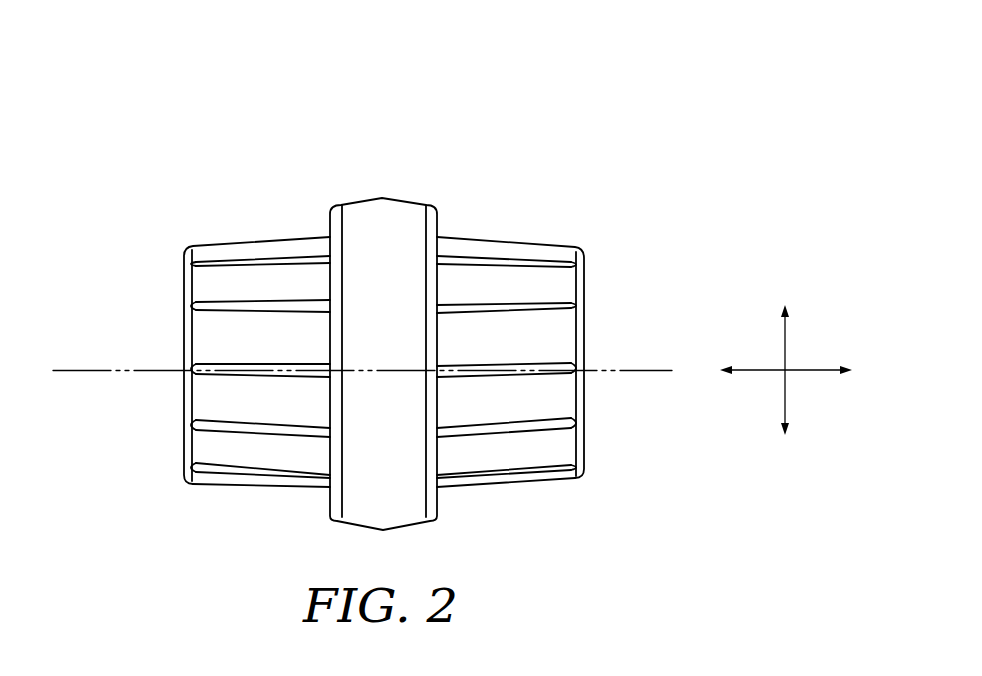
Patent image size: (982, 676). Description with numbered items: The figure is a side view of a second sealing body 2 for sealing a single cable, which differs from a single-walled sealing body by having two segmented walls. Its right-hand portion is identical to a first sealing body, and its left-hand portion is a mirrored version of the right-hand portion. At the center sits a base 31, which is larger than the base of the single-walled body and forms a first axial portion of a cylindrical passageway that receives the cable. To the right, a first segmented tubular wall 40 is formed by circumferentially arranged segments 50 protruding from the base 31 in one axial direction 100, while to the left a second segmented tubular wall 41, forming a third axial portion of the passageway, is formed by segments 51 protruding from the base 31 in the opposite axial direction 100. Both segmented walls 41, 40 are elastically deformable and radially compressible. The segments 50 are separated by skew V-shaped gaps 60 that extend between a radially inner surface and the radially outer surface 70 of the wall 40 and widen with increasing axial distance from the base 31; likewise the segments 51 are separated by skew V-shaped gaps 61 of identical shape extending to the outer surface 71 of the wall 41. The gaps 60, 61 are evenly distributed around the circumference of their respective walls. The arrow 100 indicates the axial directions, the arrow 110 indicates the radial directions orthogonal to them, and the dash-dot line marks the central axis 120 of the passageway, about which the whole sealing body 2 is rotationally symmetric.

The second sealing body 2 is at (432, 143).
The base 31 is at (375, 232).
The second segmented tubular wall 41 is at (298, 209).
The segmented tubular wall 40 is at (503, 209).
The segments 51 is at (220, 330).
The segments 50 is at (547, 330).
The skew V-shaped gaps 61 is at (183, 362).
The skew V-shaped gaps 60 is at (580, 362).
The outer surface 71 is at (248, 487).
The outer surface 70 is at (498, 488).
The arrow indicating radial directions 110 is at (787, 332).
The arrow indicating axial directions 100 is at (810, 372).
The central axis 120 is at (635, 372).